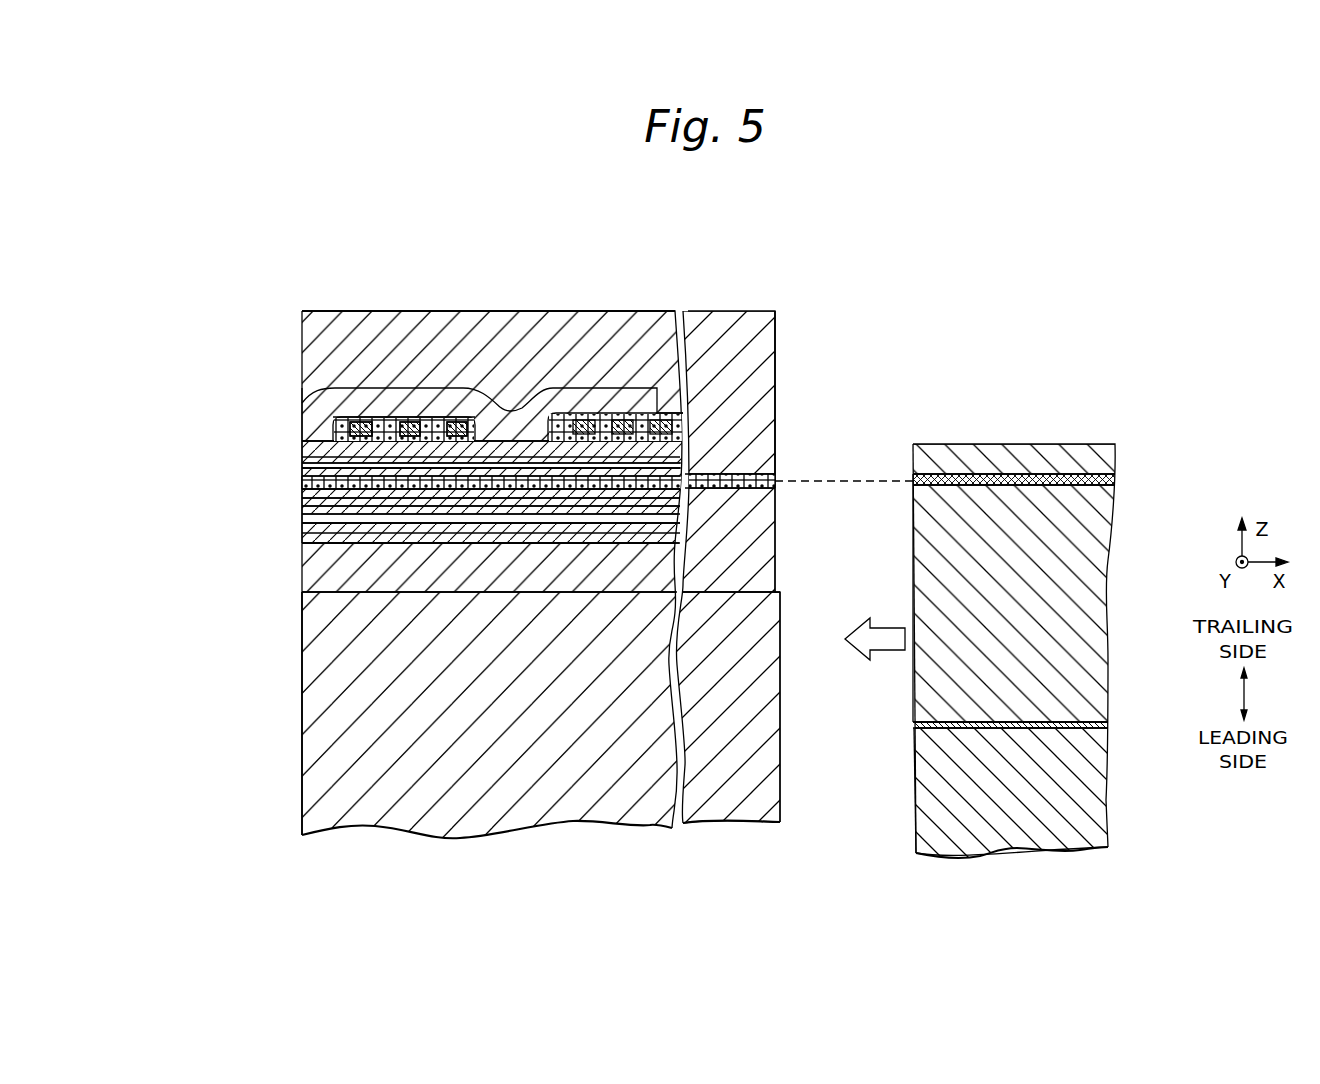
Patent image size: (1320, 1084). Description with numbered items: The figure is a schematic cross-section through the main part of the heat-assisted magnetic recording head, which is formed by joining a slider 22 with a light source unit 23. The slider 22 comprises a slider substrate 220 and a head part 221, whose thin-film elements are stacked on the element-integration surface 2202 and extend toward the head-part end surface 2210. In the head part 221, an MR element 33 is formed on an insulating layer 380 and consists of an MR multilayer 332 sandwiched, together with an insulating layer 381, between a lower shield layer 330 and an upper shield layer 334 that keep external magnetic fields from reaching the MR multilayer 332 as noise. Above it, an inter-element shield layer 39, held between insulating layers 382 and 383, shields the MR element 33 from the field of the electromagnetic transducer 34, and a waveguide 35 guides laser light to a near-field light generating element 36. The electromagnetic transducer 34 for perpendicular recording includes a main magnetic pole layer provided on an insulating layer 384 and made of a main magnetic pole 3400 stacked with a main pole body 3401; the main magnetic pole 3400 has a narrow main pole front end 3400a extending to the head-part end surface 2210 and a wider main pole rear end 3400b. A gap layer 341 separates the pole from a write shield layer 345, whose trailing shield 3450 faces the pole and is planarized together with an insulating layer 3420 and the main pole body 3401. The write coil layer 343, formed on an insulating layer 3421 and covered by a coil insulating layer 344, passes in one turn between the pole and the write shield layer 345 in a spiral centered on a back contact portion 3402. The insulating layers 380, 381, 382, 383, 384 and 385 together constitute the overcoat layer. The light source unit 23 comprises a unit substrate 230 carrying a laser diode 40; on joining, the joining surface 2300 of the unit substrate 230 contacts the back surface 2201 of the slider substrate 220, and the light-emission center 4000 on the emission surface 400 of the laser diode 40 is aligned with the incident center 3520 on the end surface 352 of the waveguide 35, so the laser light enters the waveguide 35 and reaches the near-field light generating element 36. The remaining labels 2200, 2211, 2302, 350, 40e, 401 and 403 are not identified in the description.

The slider 22 is at (604, 262).
The slider substrate 220 is at (620, 800).
The head part 221 is at (650, 305).
The substrate 2200 is at (302, 718).
The back surface 2201 is at (780, 822).
The element-integration surface 2202 is at (320, 578).
The head-part end surface 2210 is at (302, 330).
The trailing end surface 2211 is at (785, 326).
The light source unit 23 is at (1095, 322).
The unit substrate 230 is at (1078, 820).
The joining surface 2300 is at (915, 768).
The underlayer surface 2302 is at (1077, 720).
The MR element 33 is at (216, 499).
The lower shield layer 330 is at (302, 527).
The MR multilayer 332 is at (302, 509).
The upper shield layer 334 is at (302, 501).
The electromagnetic transducer 34 is at (160, 363).
The gap layer 341 is at (302, 433).
The main magnetic pole 3400 is at (218, 430).
The main pole front end 3400a is at (302, 455).
The main pole rear end 3400b is at (302, 464).
The main pole body 3401 is at (302, 470).
The back contact portion 3402 is at (497, 432).
The insulating layer 3420 is at (345, 437).
The insulating layer 3421 is at (378, 428).
The write coil layer 343 is at (410, 430).
The coil insulating layer 344 is at (395, 440).
The write shield layer 345 is at (312, 398).
The trailing shield 3450 is at (302, 416).
The waveguide 35 is at (402, 500).
The near-field light generating element 36 is at (306, 484).
The MR sensing element 350 is at (302, 482).
The end surface 352 is at (780, 486).
The incident center 3520 is at (778, 480).
The insulating layer 380 is at (540, 570).
The insulating layer 381 is at (492, 525).
The insulating layer 382 is at (473, 510).
The insulating layer 383 is at (456, 495).
The insulating layer 384 is at (428, 475).
The insulating layer 385 is at (530, 328).
The inter-element shield layer 39 is at (302, 493).
The laser diode 40 is at (1085, 538).
The underlayer top surface 40e is at (1065, 472).
The emission surface 400 is at (914, 678).
The light-emission center 4000 is at (913, 482).
The intermediate layer 401 is at (1035, 730).
The magnetic recording layer 403 is at (984, 444).